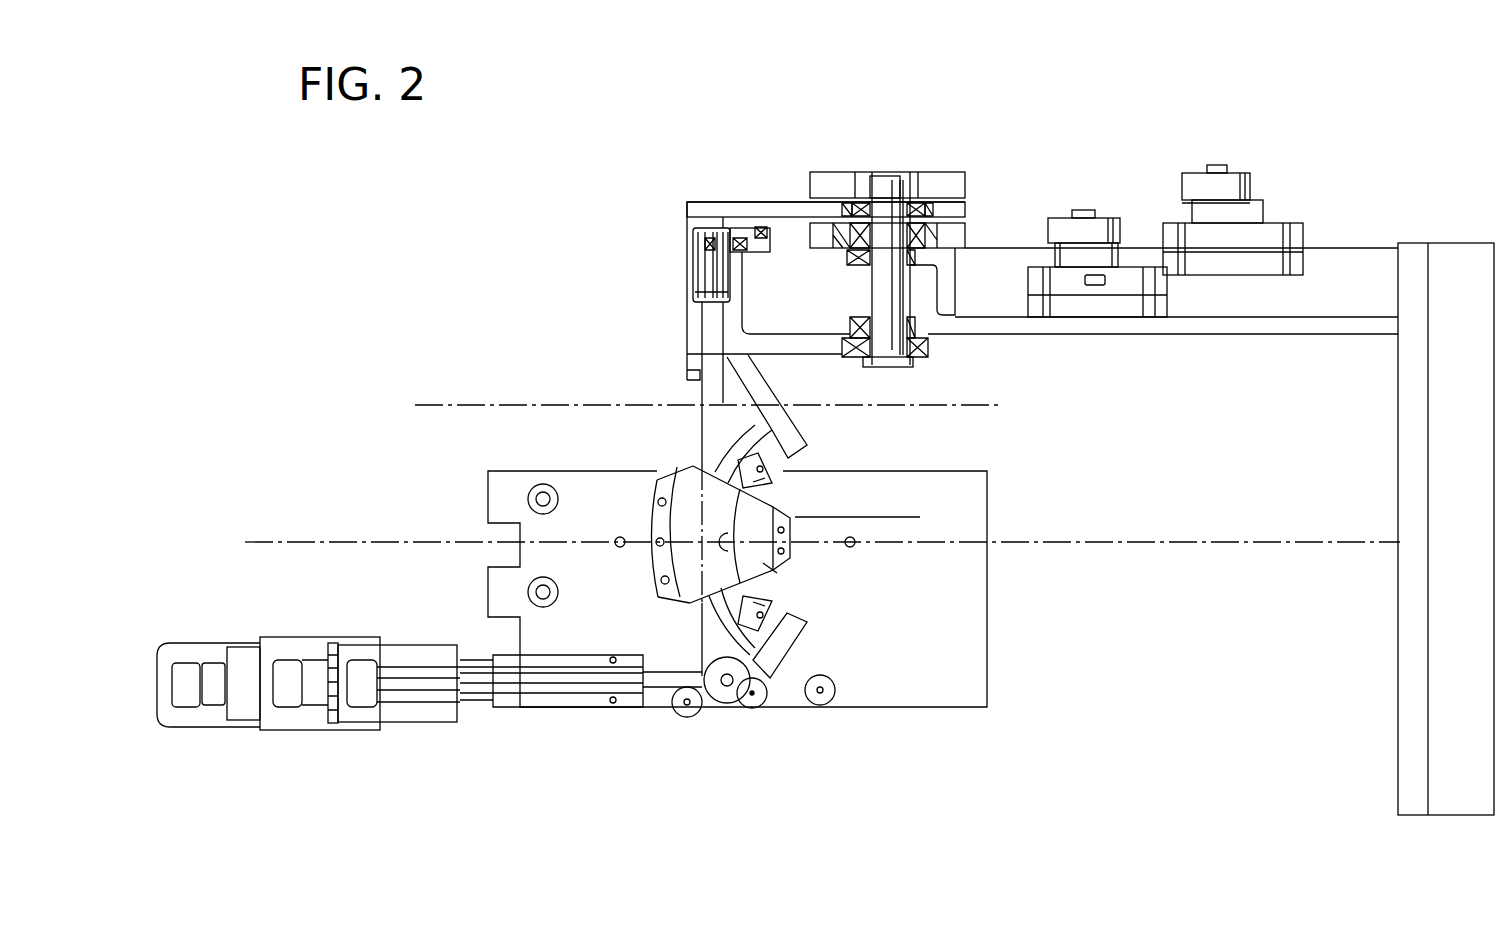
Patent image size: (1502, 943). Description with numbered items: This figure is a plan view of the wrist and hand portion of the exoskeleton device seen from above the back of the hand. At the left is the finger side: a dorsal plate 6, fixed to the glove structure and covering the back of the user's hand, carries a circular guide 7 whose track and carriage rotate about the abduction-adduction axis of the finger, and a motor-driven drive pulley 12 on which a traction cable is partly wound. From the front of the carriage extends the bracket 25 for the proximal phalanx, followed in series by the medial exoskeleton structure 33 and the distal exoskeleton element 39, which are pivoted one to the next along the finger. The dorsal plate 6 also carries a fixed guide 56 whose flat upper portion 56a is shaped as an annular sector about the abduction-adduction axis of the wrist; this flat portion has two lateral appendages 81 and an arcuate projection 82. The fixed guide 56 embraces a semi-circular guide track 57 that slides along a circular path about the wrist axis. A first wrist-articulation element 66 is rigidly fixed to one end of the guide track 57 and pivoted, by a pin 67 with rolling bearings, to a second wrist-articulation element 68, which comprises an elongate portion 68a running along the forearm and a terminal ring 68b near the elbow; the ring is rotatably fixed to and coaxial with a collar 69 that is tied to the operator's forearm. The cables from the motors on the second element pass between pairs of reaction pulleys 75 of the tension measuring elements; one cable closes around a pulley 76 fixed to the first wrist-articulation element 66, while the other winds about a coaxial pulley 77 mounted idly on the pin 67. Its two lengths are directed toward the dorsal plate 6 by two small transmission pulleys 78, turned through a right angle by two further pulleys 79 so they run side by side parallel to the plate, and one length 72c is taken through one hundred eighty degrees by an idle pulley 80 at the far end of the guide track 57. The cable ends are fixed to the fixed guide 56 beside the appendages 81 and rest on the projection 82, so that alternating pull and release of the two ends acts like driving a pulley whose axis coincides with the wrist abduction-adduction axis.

The dorsal plate 6 is at (970, 633).
The circular guide 7 is at (578, 712).
The drive pulley 12 is at (687, 717).
The bracket 25 is at (397, 640).
The medial exoskeleton structure 33 is at (313, 740).
The distal exoskeleton element 39 is at (233, 636).
The fixed guide 56 is at (683, 455).
The flat upper portion 56a is at (777, 573).
The semi-circular guide track 57 is at (770, 628).
The first wrist-articulation element 66 is at (765, 185).
The pin 67 is at (893, 300).
The second wrist-articulation element 68 is at (1325, 183).
The elongate portion 68a is at (1195, 330).
The terminal ring 68b is at (1412, 596).
The collar 69 is at (1455, 490).
The length of traction cable 72c is at (702, 388).
The reaction pulleys 75 is at (1115, 225).
The pulley 76 is at (914, 197).
The pulley 77 is at (960, 232).
The transmission pulleys 78 is at (750, 205).
The pulleys 79 is at (698, 262).
The pulley 80 is at (752, 693).
The lateral appendages 81 is at (772, 475).
The arcuate projection 82 is at (797, 548).